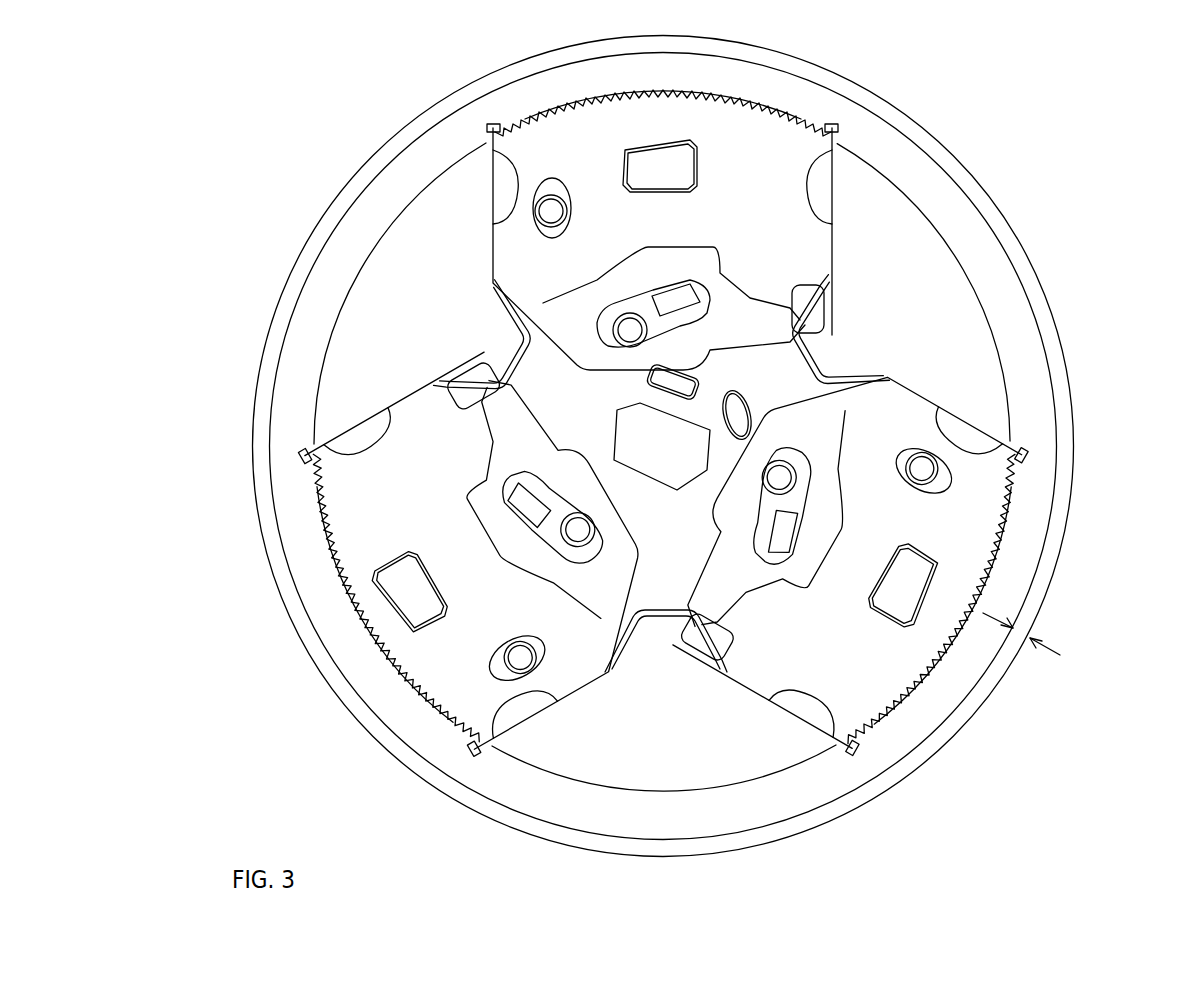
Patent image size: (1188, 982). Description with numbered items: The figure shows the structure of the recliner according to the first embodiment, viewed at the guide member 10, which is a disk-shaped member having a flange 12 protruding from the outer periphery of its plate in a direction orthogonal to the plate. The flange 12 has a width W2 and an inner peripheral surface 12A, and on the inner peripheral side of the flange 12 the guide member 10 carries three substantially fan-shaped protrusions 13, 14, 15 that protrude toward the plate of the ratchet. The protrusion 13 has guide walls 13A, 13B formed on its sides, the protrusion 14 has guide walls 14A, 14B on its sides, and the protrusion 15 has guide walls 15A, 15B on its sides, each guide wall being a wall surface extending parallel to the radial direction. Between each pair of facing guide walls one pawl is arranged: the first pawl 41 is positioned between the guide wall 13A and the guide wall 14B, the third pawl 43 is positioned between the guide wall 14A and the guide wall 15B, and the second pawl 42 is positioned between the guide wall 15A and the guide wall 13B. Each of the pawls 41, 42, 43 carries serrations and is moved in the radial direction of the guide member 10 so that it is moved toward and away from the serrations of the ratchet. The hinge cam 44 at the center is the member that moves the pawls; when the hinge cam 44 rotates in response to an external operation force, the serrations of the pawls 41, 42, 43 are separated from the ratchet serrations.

The guide member 10 is at (1040, 280).
The flange 12 is at (978, 194).
The inner peripheral surface of the flange 12A is at (1032, 580).
The protrusion 13 is at (964, 366).
The guide wall 13A is at (1002, 454).
The guide wall 13B is at (830, 153).
The protrusion 14 is at (737, 742).
The guide wall 14A is at (493, 693).
The guide wall 14B is at (873, 727).
The protrusion 15 is at (420, 253).
The guide wall 15A is at (493, 153).
The guide wall 15B is at (307, 457).
The first pawl 41 is at (974, 507).
The second pawl 42 is at (773, 160).
The third pawl 43 is at (370, 520).
The hinge cam 44 is at (555, 387).
The width of the flange W2 is at (1030, 634).